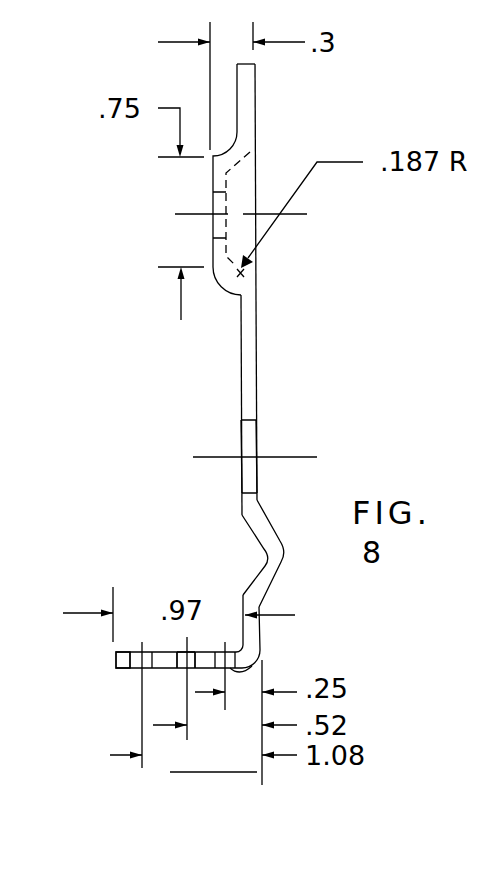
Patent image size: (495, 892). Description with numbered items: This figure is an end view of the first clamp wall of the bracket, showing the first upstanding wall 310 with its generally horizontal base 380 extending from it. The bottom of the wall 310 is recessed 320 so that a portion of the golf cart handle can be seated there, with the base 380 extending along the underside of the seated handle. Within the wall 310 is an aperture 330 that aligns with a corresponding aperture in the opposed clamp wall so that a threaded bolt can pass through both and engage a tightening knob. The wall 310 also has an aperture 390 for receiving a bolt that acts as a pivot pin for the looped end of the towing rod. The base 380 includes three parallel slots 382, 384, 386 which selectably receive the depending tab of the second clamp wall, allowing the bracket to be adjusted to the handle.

The first upstanding wall 310 is at (258, 355).
The recess 320 is at (278, 540).
The aperture 330 is at (258, 435).
The horizontal base 380 is at (135, 626).
The slot 382 is at (116, 669).
The slot 384 is at (198, 638).
The slot 386 is at (258, 661).
The aperture 390 is at (207, 228).